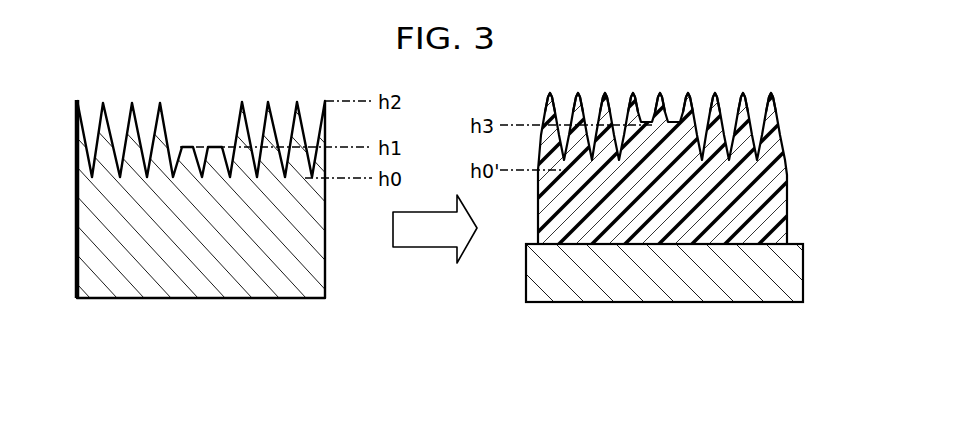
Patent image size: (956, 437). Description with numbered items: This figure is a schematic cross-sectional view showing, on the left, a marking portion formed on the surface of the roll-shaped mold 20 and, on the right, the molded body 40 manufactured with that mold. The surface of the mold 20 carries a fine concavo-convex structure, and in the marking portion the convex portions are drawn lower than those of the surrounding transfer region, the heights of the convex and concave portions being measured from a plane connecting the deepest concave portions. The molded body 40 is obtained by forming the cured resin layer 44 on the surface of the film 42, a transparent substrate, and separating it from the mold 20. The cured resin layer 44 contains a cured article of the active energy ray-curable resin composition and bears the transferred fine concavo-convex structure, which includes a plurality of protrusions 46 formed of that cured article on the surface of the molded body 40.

The roll-shaped mold 20 is at (143, 314).
The molded body 40 is at (654, 229).
The film 42 is at (693, 280).
The cured resin layer 44 is at (772, 201).
The protrusions 46 is at (546, 106).